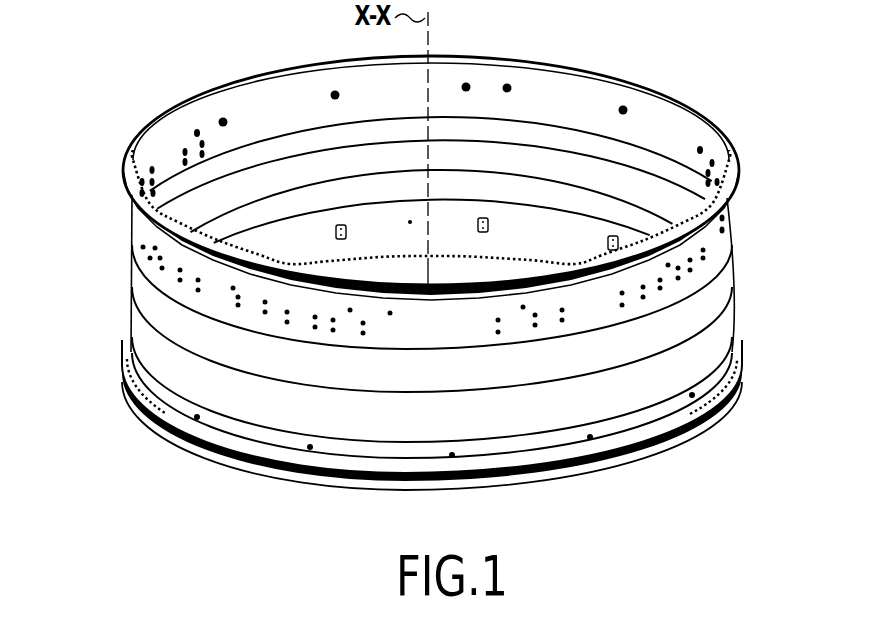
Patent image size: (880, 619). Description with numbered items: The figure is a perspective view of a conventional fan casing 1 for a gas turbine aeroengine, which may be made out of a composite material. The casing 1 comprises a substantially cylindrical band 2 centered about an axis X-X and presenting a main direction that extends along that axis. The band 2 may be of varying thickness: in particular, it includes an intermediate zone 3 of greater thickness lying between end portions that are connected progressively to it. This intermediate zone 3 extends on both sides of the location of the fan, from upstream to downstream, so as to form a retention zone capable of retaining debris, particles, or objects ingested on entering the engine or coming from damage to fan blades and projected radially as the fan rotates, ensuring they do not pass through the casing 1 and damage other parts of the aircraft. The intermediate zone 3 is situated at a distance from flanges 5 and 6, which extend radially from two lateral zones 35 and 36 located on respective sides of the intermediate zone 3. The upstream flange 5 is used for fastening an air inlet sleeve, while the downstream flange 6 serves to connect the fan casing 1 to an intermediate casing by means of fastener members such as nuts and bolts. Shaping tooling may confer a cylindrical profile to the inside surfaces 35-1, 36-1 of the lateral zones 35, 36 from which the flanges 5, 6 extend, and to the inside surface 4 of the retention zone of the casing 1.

The fan casing 1 is at (709, 95).
The band 2 is at (734, 287).
The intermediate zone 3 is at (128, 286).
The inside surface 4 is at (465, 178).
The upstream flange 5 is at (602, 71).
The downstream flange 6 is at (722, 402).
The lateral zone 35 is at (128, 245).
The lateral zone 36 is at (128, 364).
The inside surface 35-1 is at (631, 100).
The inside surface 36-1 is at (315, 257).